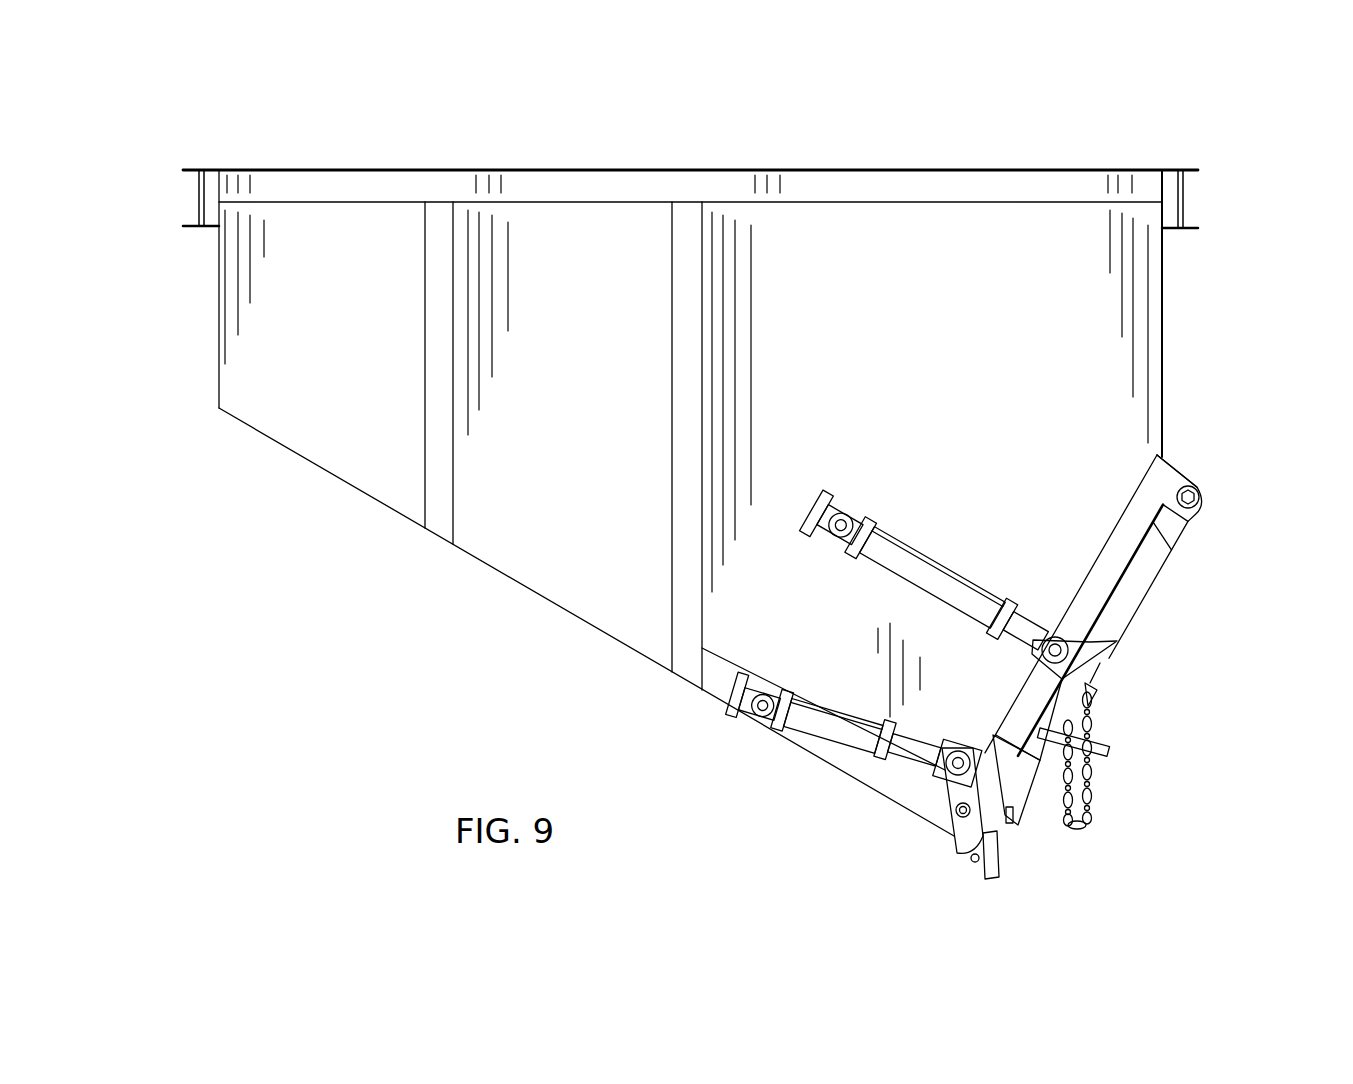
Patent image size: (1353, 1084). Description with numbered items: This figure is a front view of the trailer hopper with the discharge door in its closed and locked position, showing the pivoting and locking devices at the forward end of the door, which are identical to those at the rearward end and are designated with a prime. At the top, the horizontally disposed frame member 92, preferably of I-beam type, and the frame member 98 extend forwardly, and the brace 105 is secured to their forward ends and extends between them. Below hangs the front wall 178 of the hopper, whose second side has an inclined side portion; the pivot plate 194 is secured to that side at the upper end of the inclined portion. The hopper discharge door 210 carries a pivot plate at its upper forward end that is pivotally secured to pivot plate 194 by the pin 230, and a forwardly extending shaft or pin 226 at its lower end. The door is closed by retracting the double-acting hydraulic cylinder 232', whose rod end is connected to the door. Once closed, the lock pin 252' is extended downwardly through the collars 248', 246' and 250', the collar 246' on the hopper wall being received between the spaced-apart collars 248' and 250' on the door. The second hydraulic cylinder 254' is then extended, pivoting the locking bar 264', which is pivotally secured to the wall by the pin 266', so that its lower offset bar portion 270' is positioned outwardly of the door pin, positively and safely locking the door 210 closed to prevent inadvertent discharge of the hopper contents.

The frame member 92 is at (183, 167).
The frame member 98 is at (1205, 171).
The frame member or brace 105 is at (960, 185).
The front wall 178 is at (618, 234).
The pivot plate 194 is at (1163, 483).
The hopper discharge door 210 is at (1137, 587).
The pin 230 is at (1199, 491).
The double-acting hydraulic cylinder 232' is at (959, 572).
The double-acting hydraulic cylinder 254' is at (837, 755).
The locking bar 264' is at (889, 814).
The pin 266' is at (883, 820).
The shaft or pin 226 is at (970, 864).
The offset bar portion 270' is at (1045, 875).
The collar 250' is at (1072, 811).
The collar 246' is at (1126, 763).
The lock pin 252' is at (1125, 738).
The collar 248' is at (1156, 756).